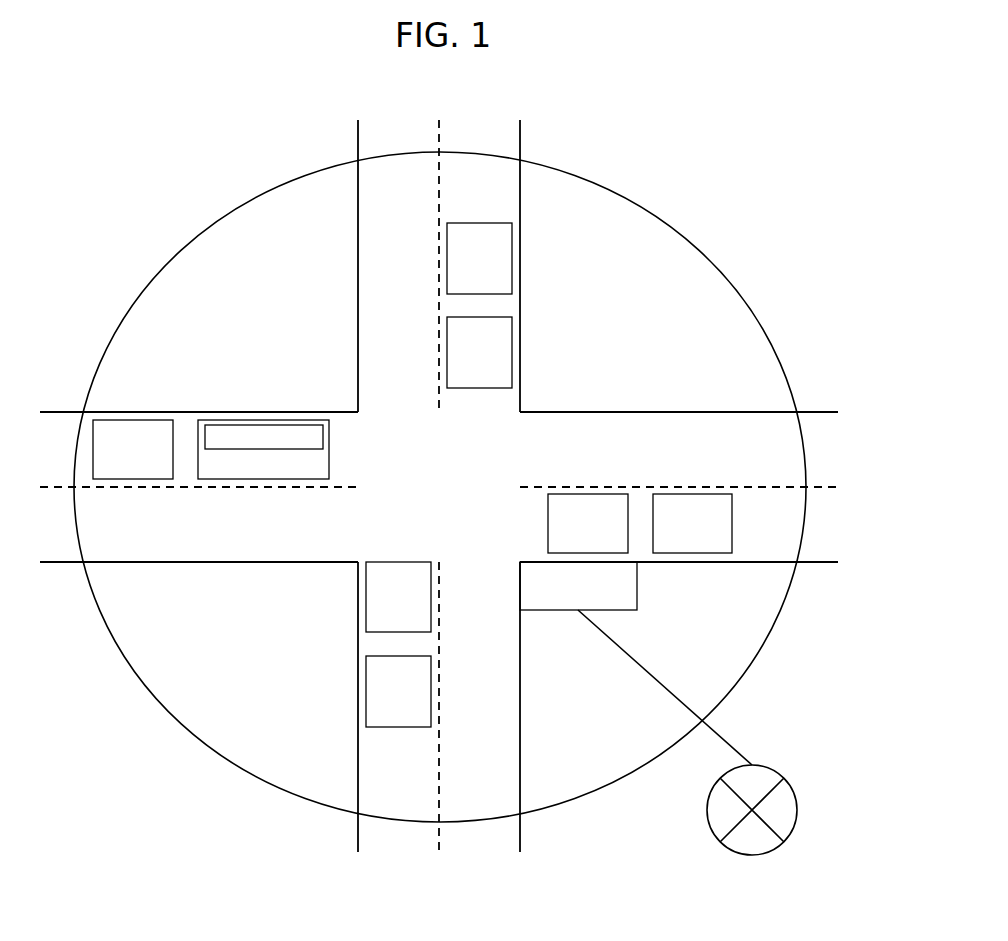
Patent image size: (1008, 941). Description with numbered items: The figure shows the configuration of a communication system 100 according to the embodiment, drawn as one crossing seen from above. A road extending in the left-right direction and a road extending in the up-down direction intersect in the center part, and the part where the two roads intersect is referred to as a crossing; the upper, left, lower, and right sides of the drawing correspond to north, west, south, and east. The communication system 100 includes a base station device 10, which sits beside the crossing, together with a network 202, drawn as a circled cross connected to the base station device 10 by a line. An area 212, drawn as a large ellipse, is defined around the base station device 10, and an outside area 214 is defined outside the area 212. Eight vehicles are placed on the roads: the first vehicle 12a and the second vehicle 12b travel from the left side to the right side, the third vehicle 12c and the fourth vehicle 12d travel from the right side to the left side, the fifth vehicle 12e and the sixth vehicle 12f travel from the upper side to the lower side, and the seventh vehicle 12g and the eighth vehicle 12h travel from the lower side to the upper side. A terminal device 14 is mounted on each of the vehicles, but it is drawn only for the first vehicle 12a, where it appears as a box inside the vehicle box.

The communication system 100 is at (683, 173).
The base station device 10 is at (637, 583).
The first vehicle 12a is at (329, 451).
The second vehicle 12b is at (173, 451).
The third vehicle 12c is at (628, 521).
The fourth vehicle 12d is at (732, 521).
The fifth vehicle 12e is at (480, 317).
The sixth vehicle 12f is at (480, 223).
The seventh vehicle 12g is at (398, 633).
The eighth vehicle 12h is at (398, 728).
The terminal device 14 is at (269, 425).
The network 202 is at (797, 801).
The area 212 is at (765, 643).
The outside area 214 is at (635, 795).